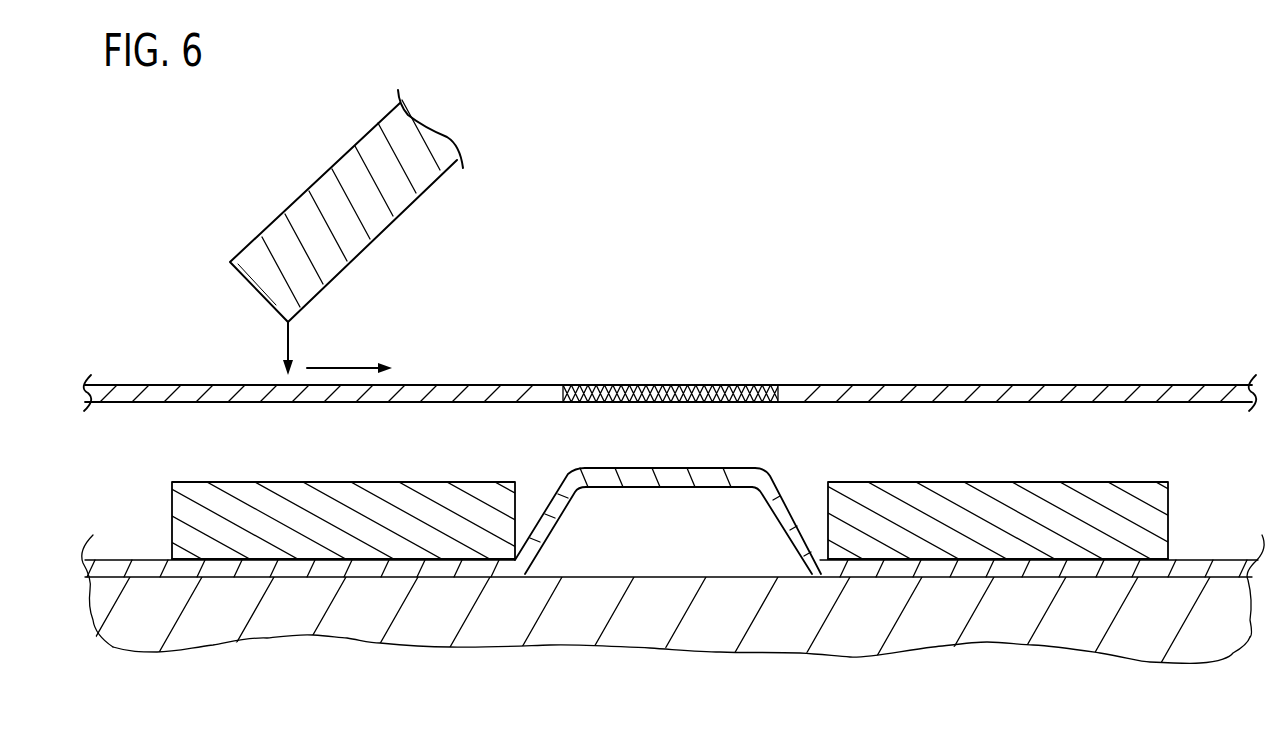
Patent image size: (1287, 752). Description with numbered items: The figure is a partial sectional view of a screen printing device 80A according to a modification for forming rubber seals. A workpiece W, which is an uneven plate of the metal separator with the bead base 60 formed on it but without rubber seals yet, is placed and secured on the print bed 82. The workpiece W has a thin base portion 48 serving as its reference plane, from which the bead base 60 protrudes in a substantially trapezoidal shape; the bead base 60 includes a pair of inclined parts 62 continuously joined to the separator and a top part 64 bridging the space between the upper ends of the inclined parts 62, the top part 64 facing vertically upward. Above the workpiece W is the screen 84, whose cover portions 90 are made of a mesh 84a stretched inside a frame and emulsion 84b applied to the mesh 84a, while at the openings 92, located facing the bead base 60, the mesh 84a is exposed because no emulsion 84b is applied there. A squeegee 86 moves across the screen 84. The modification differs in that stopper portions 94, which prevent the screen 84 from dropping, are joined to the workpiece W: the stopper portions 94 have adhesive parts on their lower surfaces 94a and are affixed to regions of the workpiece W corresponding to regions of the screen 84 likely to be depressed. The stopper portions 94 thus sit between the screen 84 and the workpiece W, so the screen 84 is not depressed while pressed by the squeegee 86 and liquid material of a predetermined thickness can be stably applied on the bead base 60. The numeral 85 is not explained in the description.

The workpiece W is at (135, 548).
The print bed 82 is at (338, 629).
The base portion 48 is at (945, 568).
The stopper portions 94 is at (311, 500).
The lower surfaces 94a is at (442, 562).
The bead base 60 is at (548, 462).
The inclined parts 62 is at (556, 517).
The top part 64 is at (677, 478).
The screen 84 is at (1191, 355).
The mesh 84a is at (608, 403).
The emulsion 84b is at (1040, 392).
The adhesive layer 85 is at (142, 403).
The cover portions 90 is at (138, 376).
The openings 92 is at (638, 371).
The screen printing device 80A is at (327, 100).
The squeegee 86 is at (320, 173).